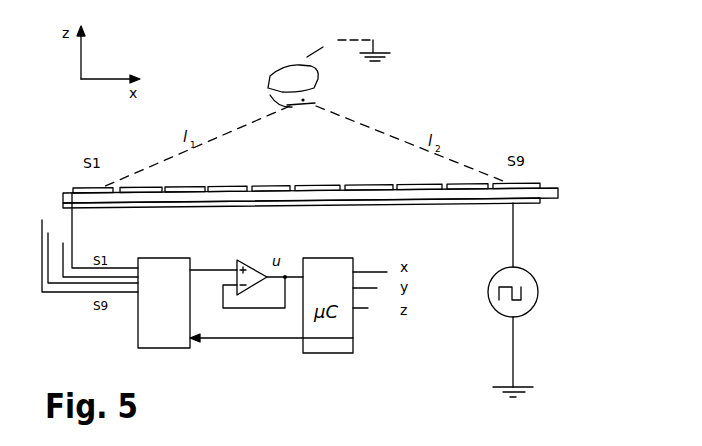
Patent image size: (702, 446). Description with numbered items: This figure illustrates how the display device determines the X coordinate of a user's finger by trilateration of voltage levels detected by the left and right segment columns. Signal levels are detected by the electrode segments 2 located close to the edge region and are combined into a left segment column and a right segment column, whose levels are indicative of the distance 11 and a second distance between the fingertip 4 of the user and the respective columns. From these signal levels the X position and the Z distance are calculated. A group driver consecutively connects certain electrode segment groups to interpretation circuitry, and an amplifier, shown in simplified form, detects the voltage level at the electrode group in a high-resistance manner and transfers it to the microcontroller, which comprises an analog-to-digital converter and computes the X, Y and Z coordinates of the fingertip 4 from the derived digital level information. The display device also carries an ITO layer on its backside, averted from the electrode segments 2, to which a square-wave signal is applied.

The electrode segments 2 is at (527, 186).
The fingertip 4 is at (322, 92).
The distance 11 is at (165, 342).